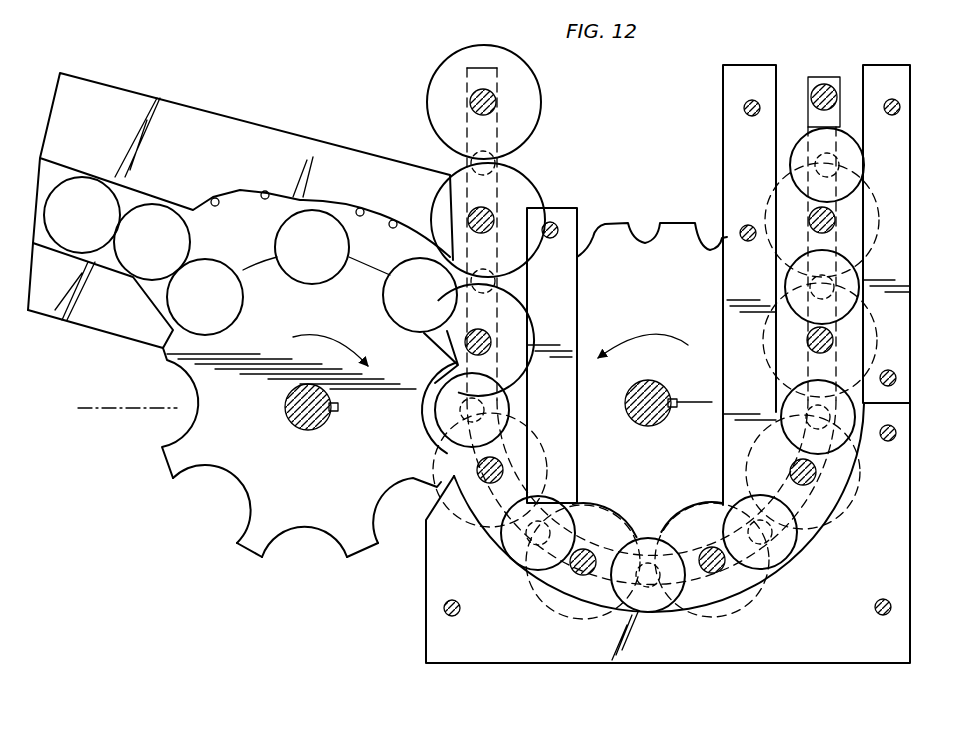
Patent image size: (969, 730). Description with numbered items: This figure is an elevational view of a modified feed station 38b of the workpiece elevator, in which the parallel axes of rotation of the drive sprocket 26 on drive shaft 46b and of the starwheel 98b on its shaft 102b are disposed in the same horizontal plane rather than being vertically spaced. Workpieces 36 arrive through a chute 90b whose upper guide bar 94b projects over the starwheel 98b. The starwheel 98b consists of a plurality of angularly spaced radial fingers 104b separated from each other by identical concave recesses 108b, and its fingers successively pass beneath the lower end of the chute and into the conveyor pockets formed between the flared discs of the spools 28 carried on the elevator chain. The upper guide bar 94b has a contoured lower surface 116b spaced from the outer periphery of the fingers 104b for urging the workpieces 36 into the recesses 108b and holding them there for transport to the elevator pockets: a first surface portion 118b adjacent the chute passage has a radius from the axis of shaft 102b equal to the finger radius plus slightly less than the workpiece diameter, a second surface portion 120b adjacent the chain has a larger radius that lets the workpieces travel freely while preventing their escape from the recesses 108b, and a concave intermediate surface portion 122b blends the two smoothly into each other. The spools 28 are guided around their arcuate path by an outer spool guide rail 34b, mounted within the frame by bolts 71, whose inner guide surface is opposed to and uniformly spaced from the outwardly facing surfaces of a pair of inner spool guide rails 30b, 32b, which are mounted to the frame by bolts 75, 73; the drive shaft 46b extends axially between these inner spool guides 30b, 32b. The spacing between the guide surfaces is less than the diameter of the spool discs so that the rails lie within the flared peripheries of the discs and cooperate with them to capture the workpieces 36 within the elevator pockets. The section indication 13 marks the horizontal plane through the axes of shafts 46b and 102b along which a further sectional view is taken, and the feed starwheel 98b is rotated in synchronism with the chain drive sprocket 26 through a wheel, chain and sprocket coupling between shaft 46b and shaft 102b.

The chute 90b is at (155, 62).
The upper guide bar 94b is at (238, 129).
The first surface portion 118b is at (214, 197).
The intermediate surface portion 122b is at (267, 191).
The contoured lower surface 116b is at (362, 208).
The second surface portion 120b is at (405, 213).
The workpieces 36 is at (180, 235).
The modified feed station 38b is at (166, 487).
The concave recesses 108b is at (222, 491).
The starwheel 98b is at (249, 555).
The radial fingers 104b is at (360, 540).
The starwheel shaft 102b is at (300, 428).
The section line 13 is at (107, 404).
The spools 28 is at (540, 133).
The inner spool guide rail 32b is at (568, 308).
The bolts 75 is at (555, 224).
The drive sprocket 26 is at (679, 222).
The outer spool guide rail 34b is at (733, 282).
The bolts 73 is at (743, 108).
The drive shaft 46b is at (643, 419).
The inner spool guide rail 30b is at (845, 648).
The bolts 71 is at (875, 603).